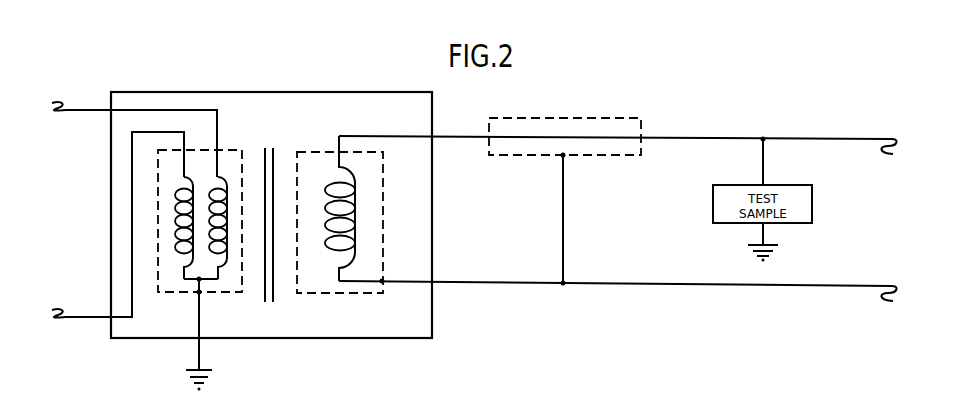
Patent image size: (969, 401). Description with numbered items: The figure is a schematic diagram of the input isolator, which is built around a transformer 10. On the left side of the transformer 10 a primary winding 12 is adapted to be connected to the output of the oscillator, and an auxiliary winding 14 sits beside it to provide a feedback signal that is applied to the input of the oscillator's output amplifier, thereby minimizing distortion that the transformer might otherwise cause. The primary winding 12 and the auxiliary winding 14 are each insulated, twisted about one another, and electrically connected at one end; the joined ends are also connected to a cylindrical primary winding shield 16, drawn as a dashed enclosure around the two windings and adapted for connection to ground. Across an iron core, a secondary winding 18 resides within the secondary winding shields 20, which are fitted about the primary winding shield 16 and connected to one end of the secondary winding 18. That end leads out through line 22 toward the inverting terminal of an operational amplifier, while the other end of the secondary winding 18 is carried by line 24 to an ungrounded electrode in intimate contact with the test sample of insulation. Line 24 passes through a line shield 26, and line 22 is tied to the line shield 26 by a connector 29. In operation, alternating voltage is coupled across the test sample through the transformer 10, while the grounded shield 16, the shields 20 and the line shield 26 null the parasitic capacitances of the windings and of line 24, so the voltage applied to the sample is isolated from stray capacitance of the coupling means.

The transformer 10 is at (432, 316).
The primary winding 12 is at (229, 254).
The auxiliary winding 14 is at (178, 254).
The primary winding shield 16 is at (227, 148).
The secondary winding 18 is at (356, 218).
The secondary winding shields 20 is at (315, 150).
The line 22 is at (659, 286).
The line 24 is at (688, 137).
The line shield 26 is at (569, 118).
The connector 29 is at (563, 205).